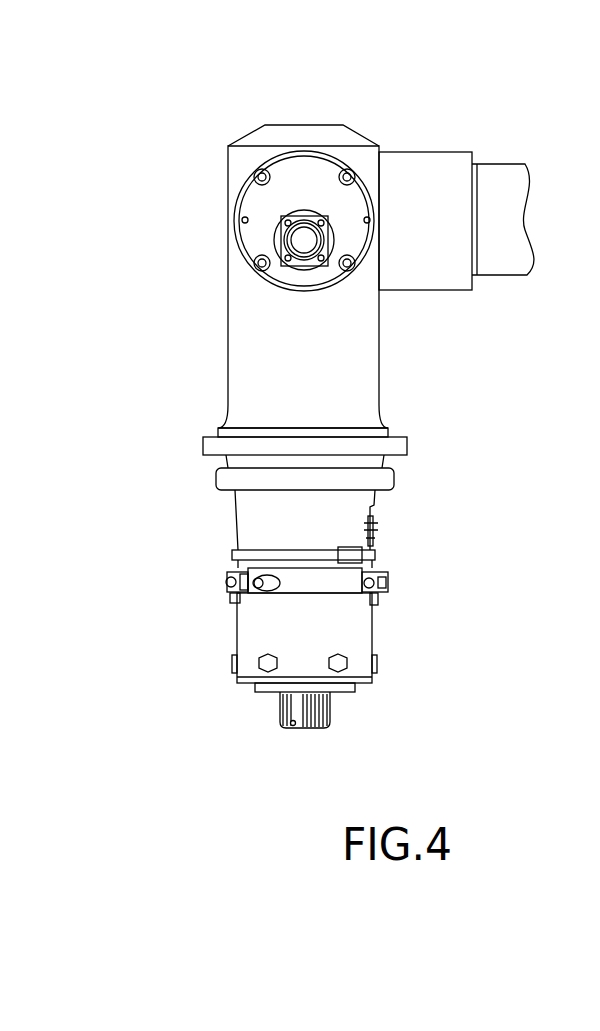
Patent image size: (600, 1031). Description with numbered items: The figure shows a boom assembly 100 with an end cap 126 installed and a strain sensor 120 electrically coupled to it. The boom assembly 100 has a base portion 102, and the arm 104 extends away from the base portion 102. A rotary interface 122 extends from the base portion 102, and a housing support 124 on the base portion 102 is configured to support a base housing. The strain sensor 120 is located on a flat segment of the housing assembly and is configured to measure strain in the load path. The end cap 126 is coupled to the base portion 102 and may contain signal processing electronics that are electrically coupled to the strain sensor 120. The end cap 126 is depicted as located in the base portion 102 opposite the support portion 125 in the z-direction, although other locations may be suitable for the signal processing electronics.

The boom assembly 100 is at (140, 84).
The base portion 102 is at (253, 345).
The arm 104 is at (506, 180).
The strain sensor 120 is at (377, 520).
The rotary interface 122 is at (323, 708).
The housing support 124 is at (385, 481).
The support portion 125 is at (425, 278).
The end cap 126 is at (321, 186).